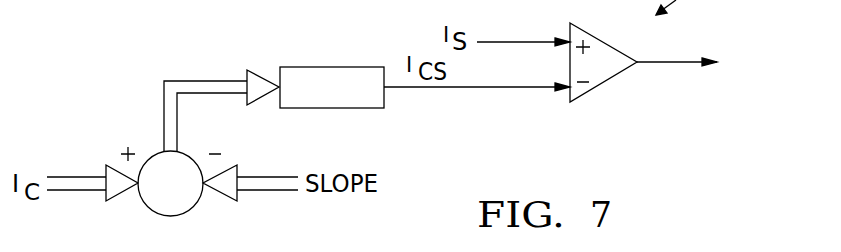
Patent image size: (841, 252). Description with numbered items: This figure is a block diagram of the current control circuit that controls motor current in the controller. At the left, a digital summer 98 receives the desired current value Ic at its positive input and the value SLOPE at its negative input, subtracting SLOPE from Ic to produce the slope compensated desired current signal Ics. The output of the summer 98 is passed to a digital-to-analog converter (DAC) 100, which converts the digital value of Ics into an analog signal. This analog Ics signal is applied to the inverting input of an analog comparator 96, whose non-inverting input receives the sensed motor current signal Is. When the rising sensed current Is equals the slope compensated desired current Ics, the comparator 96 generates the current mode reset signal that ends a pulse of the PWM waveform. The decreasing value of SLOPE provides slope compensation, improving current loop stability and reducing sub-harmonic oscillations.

The analog comparator 96 is at (597, 88).
The digital summer 98 is at (156, 152).
The digital-to-analog converter (DAC) 100 is at (297, 67).